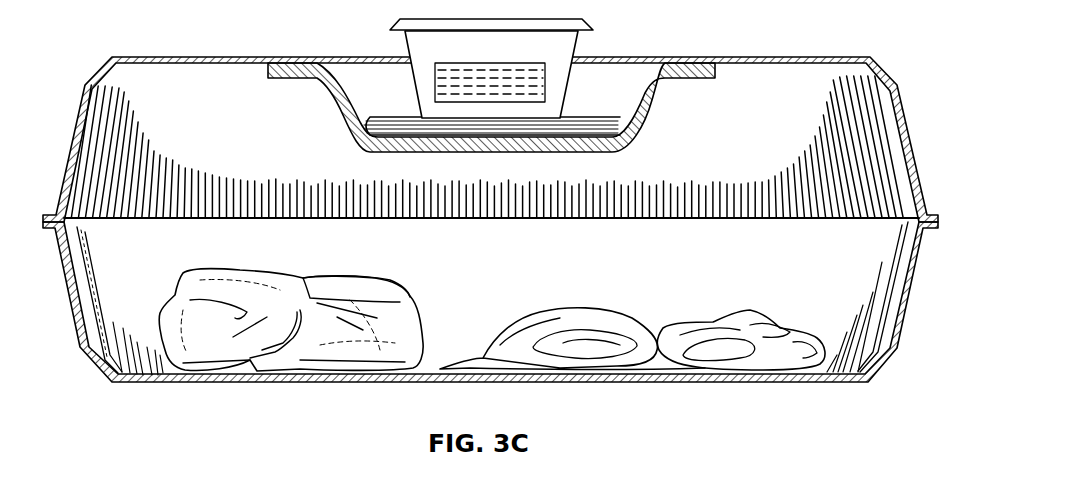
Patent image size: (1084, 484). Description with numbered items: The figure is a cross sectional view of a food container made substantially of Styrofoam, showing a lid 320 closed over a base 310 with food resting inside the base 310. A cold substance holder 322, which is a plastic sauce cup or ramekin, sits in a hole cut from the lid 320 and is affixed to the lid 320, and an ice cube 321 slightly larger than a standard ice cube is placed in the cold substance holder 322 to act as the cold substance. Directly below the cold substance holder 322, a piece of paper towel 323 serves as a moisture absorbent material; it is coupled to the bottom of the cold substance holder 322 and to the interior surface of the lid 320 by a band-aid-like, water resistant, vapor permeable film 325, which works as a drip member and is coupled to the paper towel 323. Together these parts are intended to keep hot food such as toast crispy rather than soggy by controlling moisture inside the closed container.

The base 310 is at (882, 368).
The lid 320 is at (911, 123).
The ice cube 321 is at (435, 80).
The cold substance holder 322 is at (588, 26).
The paper towel 323 is at (612, 108).
The film 325 is at (342, 97).